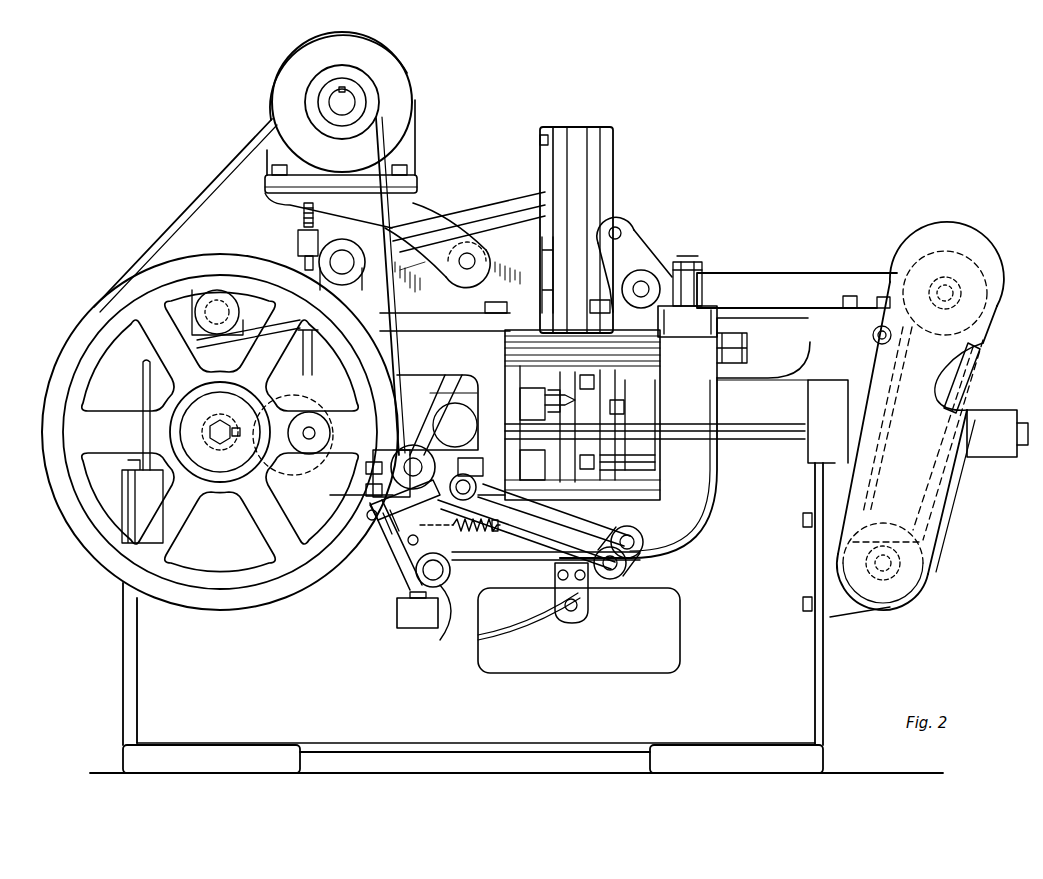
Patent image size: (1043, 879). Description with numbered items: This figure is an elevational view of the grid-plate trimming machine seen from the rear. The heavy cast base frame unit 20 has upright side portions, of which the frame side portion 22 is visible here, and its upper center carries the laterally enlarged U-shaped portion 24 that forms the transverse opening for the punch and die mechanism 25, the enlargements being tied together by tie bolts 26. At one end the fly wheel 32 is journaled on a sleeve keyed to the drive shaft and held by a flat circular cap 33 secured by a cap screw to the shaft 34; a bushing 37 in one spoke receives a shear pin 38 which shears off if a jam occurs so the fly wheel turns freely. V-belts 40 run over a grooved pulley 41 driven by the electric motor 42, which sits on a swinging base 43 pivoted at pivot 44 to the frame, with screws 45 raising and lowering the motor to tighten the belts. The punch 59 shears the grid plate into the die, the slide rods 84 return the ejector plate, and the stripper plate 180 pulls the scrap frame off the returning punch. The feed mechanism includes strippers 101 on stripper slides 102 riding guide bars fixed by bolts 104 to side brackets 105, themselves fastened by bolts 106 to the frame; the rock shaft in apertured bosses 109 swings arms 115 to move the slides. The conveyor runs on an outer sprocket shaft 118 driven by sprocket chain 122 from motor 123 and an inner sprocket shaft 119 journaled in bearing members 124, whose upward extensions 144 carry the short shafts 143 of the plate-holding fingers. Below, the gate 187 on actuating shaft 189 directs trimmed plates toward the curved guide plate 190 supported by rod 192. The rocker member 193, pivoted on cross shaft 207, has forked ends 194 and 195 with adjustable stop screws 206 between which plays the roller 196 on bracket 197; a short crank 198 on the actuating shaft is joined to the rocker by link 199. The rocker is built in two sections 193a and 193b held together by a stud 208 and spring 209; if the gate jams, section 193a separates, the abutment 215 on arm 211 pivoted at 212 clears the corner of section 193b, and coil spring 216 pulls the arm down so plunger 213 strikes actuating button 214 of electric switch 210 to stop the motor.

The main or base frame unit 20 is at (834, 693).
The frame side portion 22 is at (249, 671).
The U-shaped portion 24 is at (717, 520).
The punch and die mechanism 25 is at (527, 371).
The tie bolts 26 is at (748, 352).
The fly wheel 32 is at (44, 432).
The flat circular cap 33 is at (215, 468).
The shaft 34 is at (222, 428).
The bushing 37 is at (303, 425).
The shear pin 38 is at (310, 428).
The V-belts 40 is at (200, 197).
The pulley 41 is at (376, 100).
The electric motor 42 is at (388, 65).
The swinging base 43 is at (418, 208).
The pivot 44 is at (470, 252).
The screws 45 is at (303, 217).
The punch 59 is at (567, 410).
The slide rods 84 is at (758, 440).
The strippers 101 is at (613, 168).
The stripper slides 102 is at (558, 127).
The bolts 104 is at (545, 296).
The side brackets 105 is at (432, 283).
The bolts 106 is at (362, 340).
The apertured bosses 109 is at (348, 250).
The arms 115 is at (470, 216).
The outer sprocket shaft 118 is at (946, 290).
The inner sprocket shaft 119 is at (645, 289).
The sprocket chain 122 is at (970, 383).
The motor 123 is at (920, 578).
The bearing members 124 is at (666, 270).
The short shafts 143 is at (622, 233).
The upward extensions 144 is at (645, 250).
The stripper plate 180 is at (593, 468).
The gate 187 is at (590, 590).
The actuating shaft 189 is at (632, 540).
The curved guide plate 190 is at (522, 622).
The rod 192 is at (572, 615).
The rocker member 193 is at (452, 558).
The rocker section 193a is at (396, 572).
The rocker section 193b is at (450, 571).
The forked end 194 is at (466, 470).
The forked end 195 is at (378, 450).
The roller 196 is at (445, 395).
The bracket 197 is at (420, 373).
The short crank 198 is at (625, 568).
The link 199 is at (526, 534).
The adjustable stop screws 206 is at (366, 468).
The cross shaft 207 is at (446, 625).
The stud 208 is at (515, 522).
The spring 209 is at (460, 516).
The electric switch 210 is at (398, 622).
The arm 211 is at (368, 513).
The pivot 212 is at (424, 467).
The plunger 213 is at (398, 545).
The actuating button 214 is at (410, 596).
The abutment 215 is at (375, 520).
The coil spring 216 is at (392, 536).